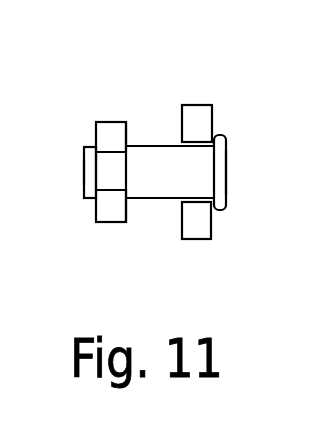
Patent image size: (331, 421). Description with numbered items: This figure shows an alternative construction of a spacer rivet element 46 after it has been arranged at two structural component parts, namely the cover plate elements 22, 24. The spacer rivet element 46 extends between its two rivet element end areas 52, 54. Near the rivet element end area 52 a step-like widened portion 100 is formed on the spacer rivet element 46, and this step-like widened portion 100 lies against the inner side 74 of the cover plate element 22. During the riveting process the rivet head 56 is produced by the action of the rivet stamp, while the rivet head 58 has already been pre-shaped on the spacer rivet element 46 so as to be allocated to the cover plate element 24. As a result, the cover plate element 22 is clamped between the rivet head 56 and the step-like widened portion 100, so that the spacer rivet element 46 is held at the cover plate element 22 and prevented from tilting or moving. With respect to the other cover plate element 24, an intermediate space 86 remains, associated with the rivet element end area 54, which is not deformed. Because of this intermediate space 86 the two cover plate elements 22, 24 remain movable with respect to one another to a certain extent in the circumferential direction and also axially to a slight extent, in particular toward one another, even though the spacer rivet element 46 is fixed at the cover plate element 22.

The cover plate element 22 is at (106, 122).
The cover plate element 24 is at (196, 105).
The spacer rivet element 46 is at (158, 146).
The rivet element end area 52 is at (91, 168).
The rivet element end area 54 is at (199, 170).
The rivet head 56 is at (84, 149).
The rivet head 58 is at (226, 184).
The inner side 74 is at (128, 130).
The intermediate space 86 is at (198, 204).
The step-like widened portion 100 is at (124, 197).